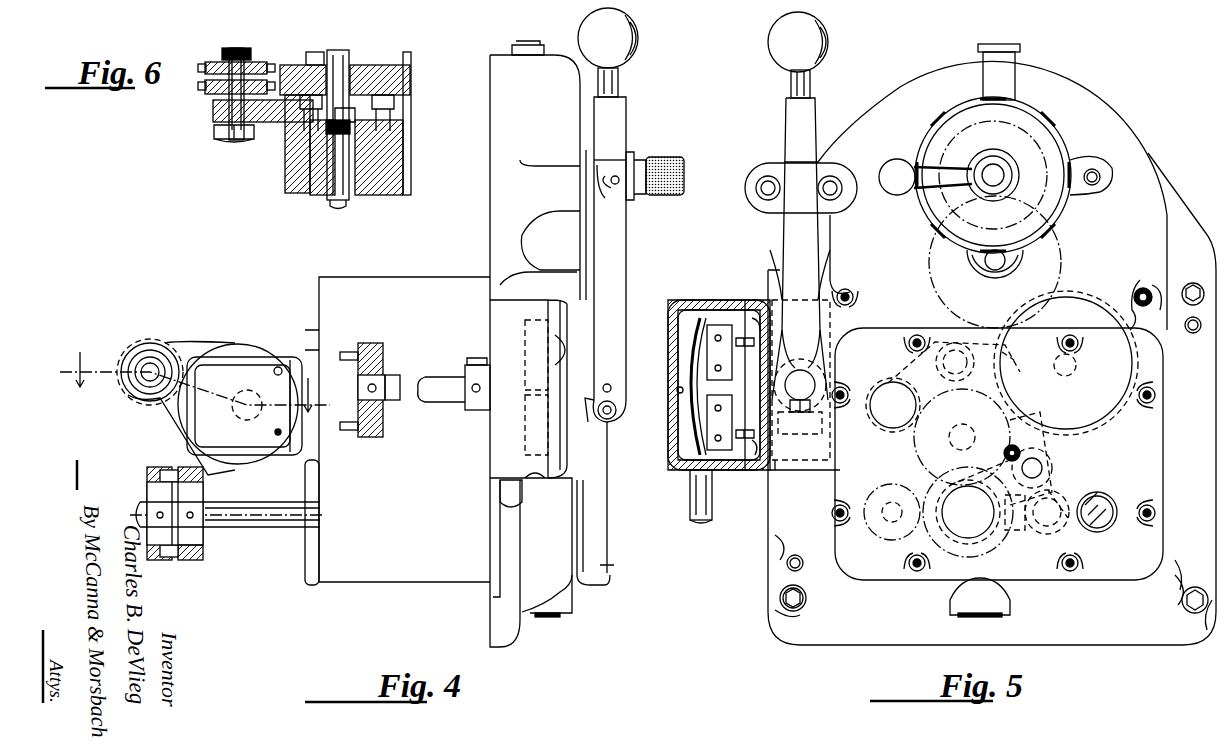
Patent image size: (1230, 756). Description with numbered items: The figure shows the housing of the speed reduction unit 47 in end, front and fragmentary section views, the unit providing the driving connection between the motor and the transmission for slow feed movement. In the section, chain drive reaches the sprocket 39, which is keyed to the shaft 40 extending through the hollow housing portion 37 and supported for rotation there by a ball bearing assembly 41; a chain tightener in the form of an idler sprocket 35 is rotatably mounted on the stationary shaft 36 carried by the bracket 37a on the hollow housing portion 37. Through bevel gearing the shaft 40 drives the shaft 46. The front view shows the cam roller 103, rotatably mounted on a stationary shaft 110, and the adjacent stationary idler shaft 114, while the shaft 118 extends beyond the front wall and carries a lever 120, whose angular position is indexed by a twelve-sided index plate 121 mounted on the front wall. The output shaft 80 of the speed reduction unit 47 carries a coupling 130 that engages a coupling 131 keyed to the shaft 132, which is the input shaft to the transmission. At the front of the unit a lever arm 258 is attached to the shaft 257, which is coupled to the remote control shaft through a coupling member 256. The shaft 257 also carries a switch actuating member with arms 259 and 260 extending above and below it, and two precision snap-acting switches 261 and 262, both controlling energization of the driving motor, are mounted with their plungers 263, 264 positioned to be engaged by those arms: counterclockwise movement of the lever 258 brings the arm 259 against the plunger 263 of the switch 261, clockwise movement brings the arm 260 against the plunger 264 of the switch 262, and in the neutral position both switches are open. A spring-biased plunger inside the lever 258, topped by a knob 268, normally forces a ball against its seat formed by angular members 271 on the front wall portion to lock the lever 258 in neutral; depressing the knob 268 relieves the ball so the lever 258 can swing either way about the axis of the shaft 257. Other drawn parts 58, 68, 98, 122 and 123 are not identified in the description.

In FIG. 6, the idler sprocket 35 is at (206, 68).
In FIG. 6, the stationary shaft 36 is at (244, 50).
In FIG. 6, the hollow housing portion 37 is at (290, 176).
In FIG. 6, the bracket 37a is at (278, 124).
In FIG. 6, the sprocket 39 is at (366, 62).
In FIG. 6, the shaft 40 is at (338, 55).
In FIG. 4, the shaft 40 is at (248, 390).
In FIG. 6, the ball bearing assembly 41 is at (405, 140).
In FIG. 5, the shaft 46 is at (874, 418).
In FIG. 4, the speed reduction unit 47 is at (571, 52).
In FIG. 5, the speed reduction unit 47 is at (1122, 564).
In FIG. 5, the gear 58 is at (950, 440).
In FIG. 5, the gear 68 is at (964, 524).
In FIG. 4, the output shaft 80 is at (250, 527).
In FIG. 5, the output shaft 80 is at (890, 524).
In FIG. 5, the sight window 98 is at (1052, 526).
In FIG. 5, the cam roller 103 is at (1106, 415).
In FIG. 5, the stationary shaft 110 is at (1077, 370).
In FIG. 5, the stationary idler shaft 114 is at (1012, 260).
In FIG. 5, the shaft 118 is at (1005, 178).
In FIG. 5, the lever 120 is at (938, 168).
In FIG. 5, the index plate 121 is at (1058, 130).
In FIG. 5, the gear 122 is at (952, 345).
In FIG. 5, the pinion 123 is at (1044, 468).
In FIG. 4, the coupling 130 is at (196, 560).
In FIG. 4, the coupling 131 is at (155, 467).
In FIG. 4, the shaft 132 is at (140, 500).
In FIG. 4, the coupling member 256 is at (368, 437).
In FIG. 4, the shaft 257 is at (432, 402).
In FIG. 4, the lever arm 258 is at (620, 131).
In FIG. 5, the lever arm 258 is at (810, 130).
In FIG. 5, the arm 259 is at (798, 352).
In FIG. 5, the arm 260 is at (786, 440).
In FIG. 4, the snap-acting switch 261 is at (526, 340).
In FIG. 5, the snap-acting switch 261 is at (724, 300).
In FIG. 4, the snap-acting switch 262 is at (526, 442).
In FIG. 5, the snap-acting switch 262 is at (716, 485).
In FIG. 5, the plunger 263 is at (765, 290).
In FIG. 5, the plunger 264 is at (760, 470).
In FIG. 4, the knob 268 is at (638, 41).
In FIG. 5, the knob 268 is at (828, 43).
In FIG. 5, the angular member 271 is at (766, 181).